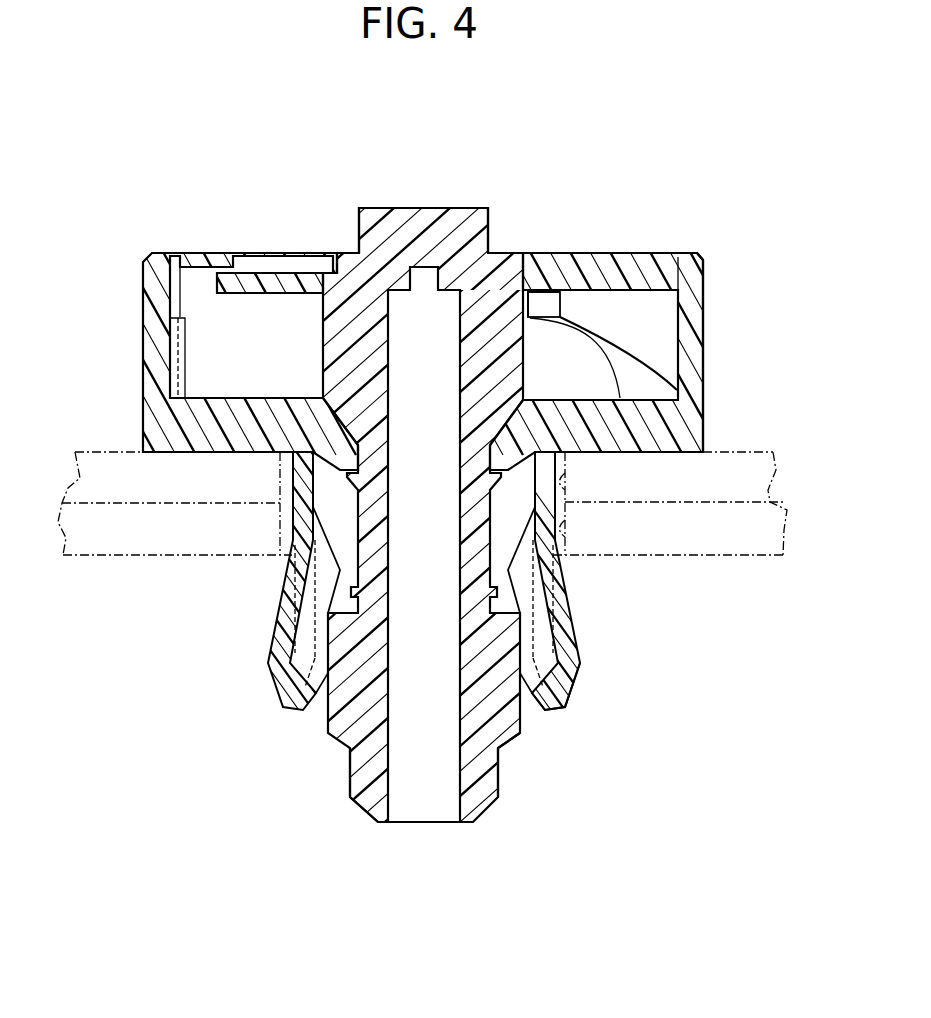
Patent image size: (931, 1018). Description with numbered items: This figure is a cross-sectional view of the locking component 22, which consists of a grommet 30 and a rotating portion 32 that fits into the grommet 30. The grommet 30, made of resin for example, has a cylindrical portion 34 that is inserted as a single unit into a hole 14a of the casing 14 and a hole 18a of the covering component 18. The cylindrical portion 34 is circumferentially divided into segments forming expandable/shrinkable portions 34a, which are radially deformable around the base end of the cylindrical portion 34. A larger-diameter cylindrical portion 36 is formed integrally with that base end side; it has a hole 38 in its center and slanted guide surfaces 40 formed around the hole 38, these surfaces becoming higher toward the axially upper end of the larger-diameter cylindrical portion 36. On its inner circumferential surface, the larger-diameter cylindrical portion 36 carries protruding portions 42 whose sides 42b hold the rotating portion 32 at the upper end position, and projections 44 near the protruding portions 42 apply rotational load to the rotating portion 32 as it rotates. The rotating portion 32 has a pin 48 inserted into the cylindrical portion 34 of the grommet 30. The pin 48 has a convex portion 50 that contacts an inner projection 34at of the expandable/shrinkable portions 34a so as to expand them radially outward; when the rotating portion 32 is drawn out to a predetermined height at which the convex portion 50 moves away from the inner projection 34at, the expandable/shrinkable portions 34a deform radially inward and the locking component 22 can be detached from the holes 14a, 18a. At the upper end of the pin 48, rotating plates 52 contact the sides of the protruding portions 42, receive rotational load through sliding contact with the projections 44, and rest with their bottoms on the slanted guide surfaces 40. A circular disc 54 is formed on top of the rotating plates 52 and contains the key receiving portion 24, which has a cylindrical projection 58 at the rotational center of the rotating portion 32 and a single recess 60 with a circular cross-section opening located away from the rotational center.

The locking component 22 is at (521, 82).
The projection 58 is at (429, 207).
The recess 60 is at (232, 262).
The key receiving portion 24 is at (316, 240).
The side of protruding portion 42b is at (552, 300).
The protruding portion 42 is at (542, 290).
The rotating portion 32 is at (595, 253).
The circular disc 54 is at (639, 257).
The rotating plate 52 is at (176, 302).
The larger-diameter cylindrical portion 36 is at (693, 308).
The projection 44 is at (183, 360).
The slanted guide surface 40 is at (643, 372).
The hole 38 is at (515, 425).
The covering component 18 is at (740, 451).
The hole 18a is at (565, 473).
The hole 14a is at (565, 520).
The casing 14 is at (740, 555).
The grommet 30 is at (293, 520).
The inner projection 34at is at (322, 595).
The cylindrical portion 34 is at (553, 600).
The expandable/shrinkable portion 34a is at (572, 667).
The convex portion 50 is at (508, 730).
The pin 48 is at (367, 800).